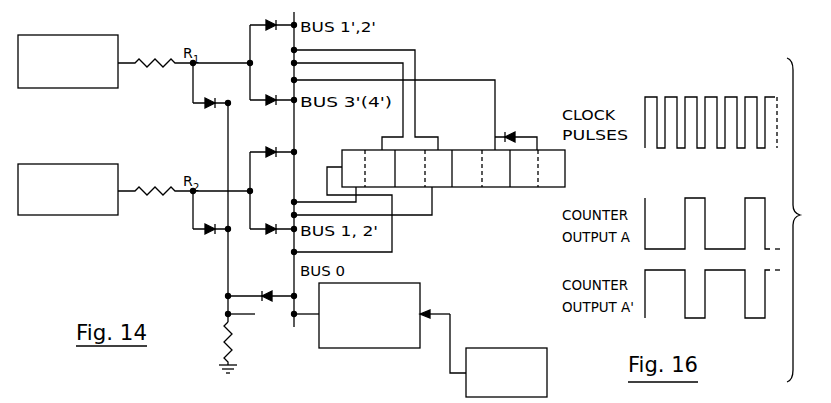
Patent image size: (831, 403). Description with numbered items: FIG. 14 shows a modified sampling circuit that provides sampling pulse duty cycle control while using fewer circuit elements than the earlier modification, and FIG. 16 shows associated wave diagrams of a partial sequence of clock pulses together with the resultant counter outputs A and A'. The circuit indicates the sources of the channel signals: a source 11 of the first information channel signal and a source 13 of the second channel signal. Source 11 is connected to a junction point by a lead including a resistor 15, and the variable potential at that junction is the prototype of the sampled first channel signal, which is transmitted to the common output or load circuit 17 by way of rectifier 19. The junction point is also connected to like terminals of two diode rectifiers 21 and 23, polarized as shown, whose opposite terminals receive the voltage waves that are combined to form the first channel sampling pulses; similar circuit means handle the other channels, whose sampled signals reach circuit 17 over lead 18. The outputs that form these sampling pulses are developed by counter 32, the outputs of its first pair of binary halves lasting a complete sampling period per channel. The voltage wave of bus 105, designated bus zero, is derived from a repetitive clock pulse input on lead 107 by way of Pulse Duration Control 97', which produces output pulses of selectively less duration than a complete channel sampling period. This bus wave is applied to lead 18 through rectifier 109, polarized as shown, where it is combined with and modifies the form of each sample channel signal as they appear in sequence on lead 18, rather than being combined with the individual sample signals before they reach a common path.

The source 11 is at (58, 34).
The source 13 is at (68, 151).
The resistor 15 is at (146, 48).
The output circuit 17 is at (262, 352).
The lead 18 is at (228, 257).
The rectifier 19 is at (213, 108).
The diode rectifier 21 is at (274, 22).
The diode rectifier 23 is at (272, 104).
The counter 32 is at (482, 212).
The pulse duration control 97' is at (357, 305).
The bus 105 is at (294, 328).
The lead 107 is at (450, 313).
The rectifier 109 is at (268, 272).